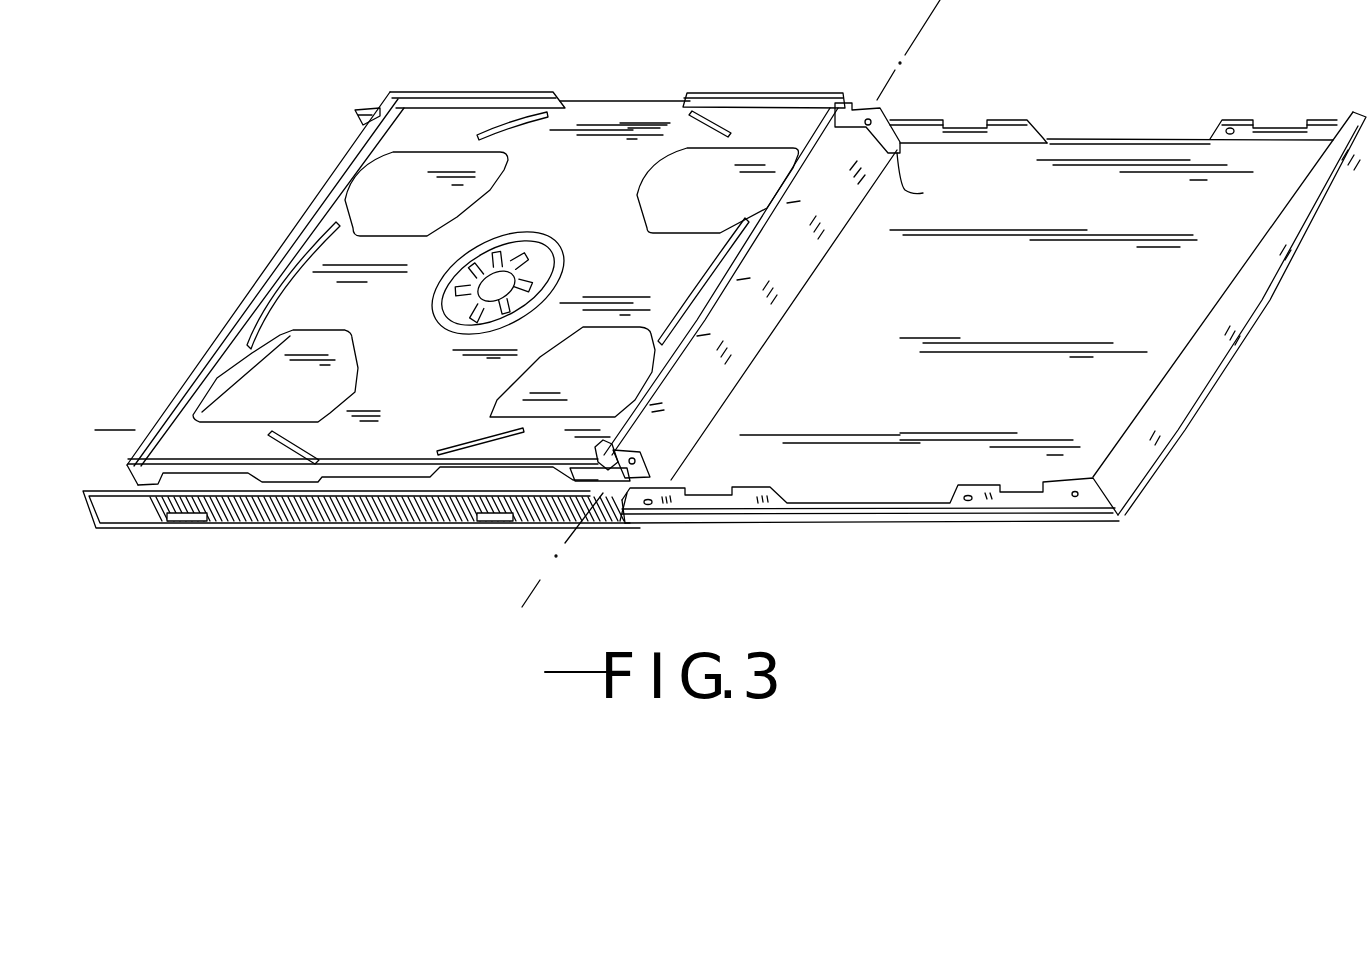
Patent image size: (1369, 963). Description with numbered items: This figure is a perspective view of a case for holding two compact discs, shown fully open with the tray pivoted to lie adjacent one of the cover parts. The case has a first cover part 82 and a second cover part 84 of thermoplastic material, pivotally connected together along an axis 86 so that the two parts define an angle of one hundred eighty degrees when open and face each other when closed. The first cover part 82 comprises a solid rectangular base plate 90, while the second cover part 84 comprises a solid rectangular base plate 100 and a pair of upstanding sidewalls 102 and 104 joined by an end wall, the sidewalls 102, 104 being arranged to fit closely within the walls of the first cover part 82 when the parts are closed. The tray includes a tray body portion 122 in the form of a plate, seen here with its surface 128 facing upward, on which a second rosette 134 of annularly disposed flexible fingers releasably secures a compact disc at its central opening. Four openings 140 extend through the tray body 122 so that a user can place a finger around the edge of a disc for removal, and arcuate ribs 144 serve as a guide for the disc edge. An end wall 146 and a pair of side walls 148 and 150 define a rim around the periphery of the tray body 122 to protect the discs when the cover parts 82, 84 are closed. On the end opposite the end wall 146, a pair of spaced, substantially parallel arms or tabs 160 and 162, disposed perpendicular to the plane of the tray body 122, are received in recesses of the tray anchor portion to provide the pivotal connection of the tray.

The first cover part 82 is at (110, 466).
The second cover part 84 is at (1240, 366).
The pivot axis 86 is at (937, 23).
The base plate 90 is at (177, 482).
The base plate 100 is at (1003, 302).
The sidewall 102 is at (747, 503).
The sidewall 104 is at (1010, 130).
The tray body portion 122 is at (236, 327).
The surface 128 is at (446, 400).
The second rosette 134 is at (528, 230).
The openings 140 is at (413, 157).
The arcuate ribs 144 is at (500, 128).
The end wall 146 is at (1295, 265).
The side wall 148 is at (277, 470).
The side wall 150 is at (695, 90).
The arm or tab 160 is at (630, 507).
The arm or tab 162 is at (857, 100).